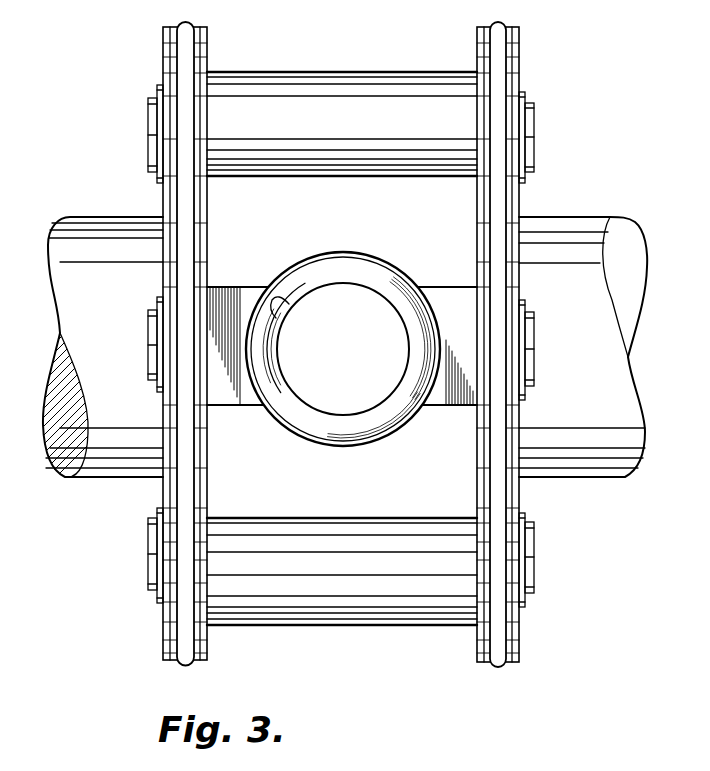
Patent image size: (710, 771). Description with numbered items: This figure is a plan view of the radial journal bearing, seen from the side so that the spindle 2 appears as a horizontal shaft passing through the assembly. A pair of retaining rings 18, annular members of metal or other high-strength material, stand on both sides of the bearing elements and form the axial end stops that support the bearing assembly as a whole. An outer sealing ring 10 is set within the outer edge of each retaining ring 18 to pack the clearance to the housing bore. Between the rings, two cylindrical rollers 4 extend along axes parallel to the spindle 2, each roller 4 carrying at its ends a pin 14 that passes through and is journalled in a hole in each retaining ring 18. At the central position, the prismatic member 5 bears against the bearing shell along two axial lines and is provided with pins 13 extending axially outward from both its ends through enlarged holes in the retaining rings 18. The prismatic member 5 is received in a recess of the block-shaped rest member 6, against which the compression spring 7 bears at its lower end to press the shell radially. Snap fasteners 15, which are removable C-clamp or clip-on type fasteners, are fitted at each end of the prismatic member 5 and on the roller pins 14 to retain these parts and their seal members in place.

The spindle 2 is at (535, 222).
The cylindrical roller 4 is at (430, 78).
The prismatic member 5 is at (222, 406).
The rest member 6 is at (305, 388).
The compression spring 7 is at (397, 403).
The outer sealing ring 10 is at (180, 664).
The pin 13 is at (534, 382).
The pin 14 is at (534, 128).
The snap fastener 15 is at (158, 89).
The retaining ring 18 is at (508, 66).